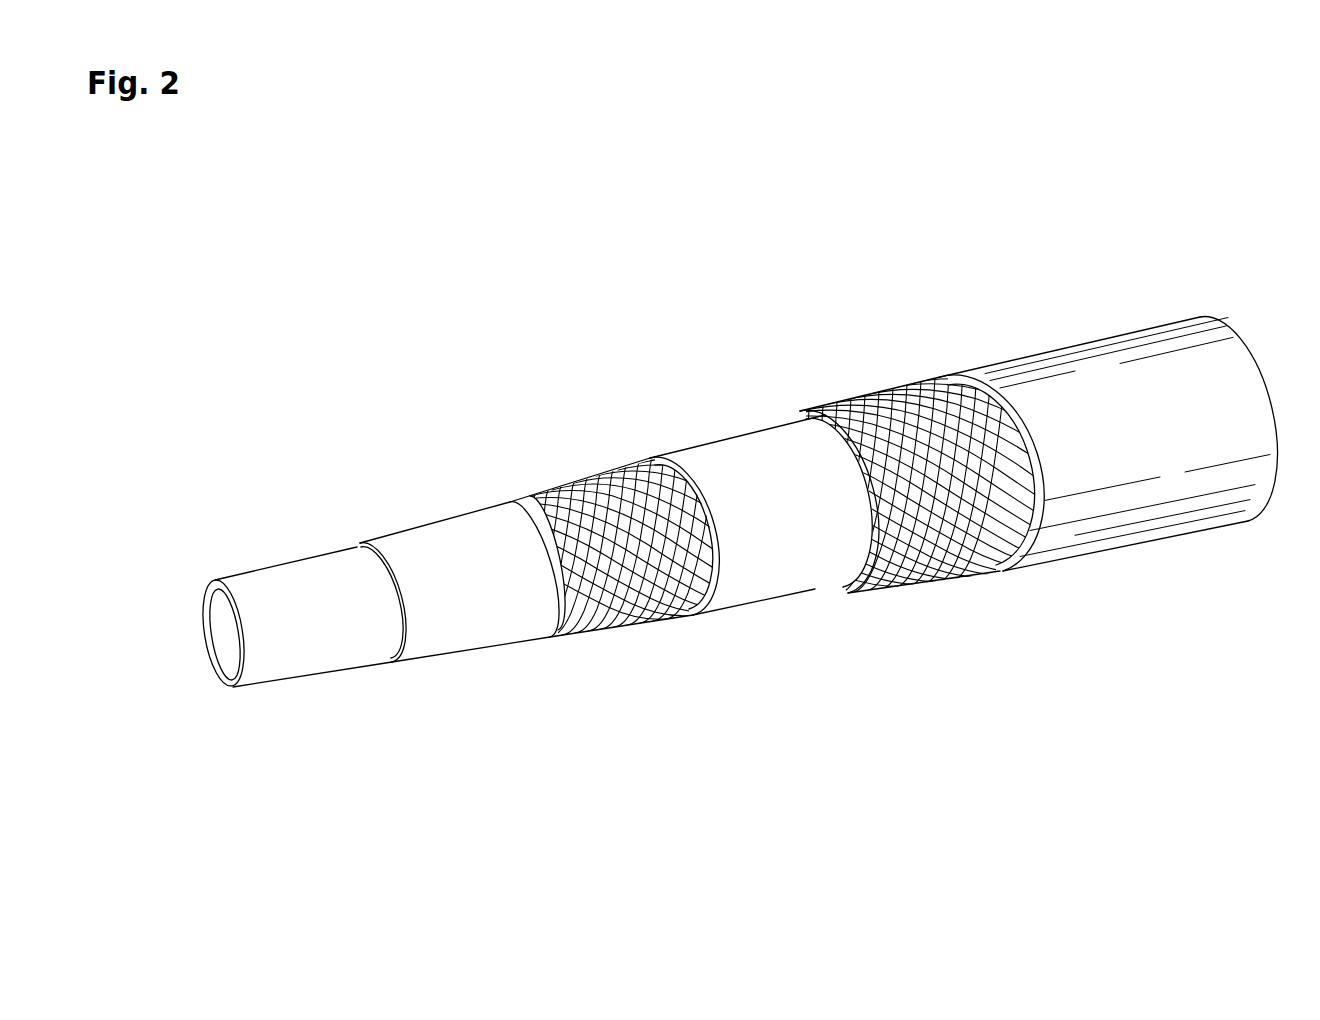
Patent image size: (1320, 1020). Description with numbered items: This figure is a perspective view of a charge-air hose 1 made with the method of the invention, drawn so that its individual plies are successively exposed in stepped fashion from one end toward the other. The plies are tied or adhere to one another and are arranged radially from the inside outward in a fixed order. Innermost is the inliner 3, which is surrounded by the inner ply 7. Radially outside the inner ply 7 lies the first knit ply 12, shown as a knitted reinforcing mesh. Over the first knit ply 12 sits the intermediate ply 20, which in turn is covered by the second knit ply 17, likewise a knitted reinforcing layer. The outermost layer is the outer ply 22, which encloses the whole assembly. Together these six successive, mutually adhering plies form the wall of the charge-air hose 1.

The charge-air hose 1 is at (715, 290).
The inliner 3 is at (317, 643).
The inner ply 7 is at (475, 602).
The first knit ply 12 is at (627, 583).
The intermediate ply 20 is at (792, 542).
The second knit ply 17 is at (955, 532).
The outer ply 22 is at (1153, 520).